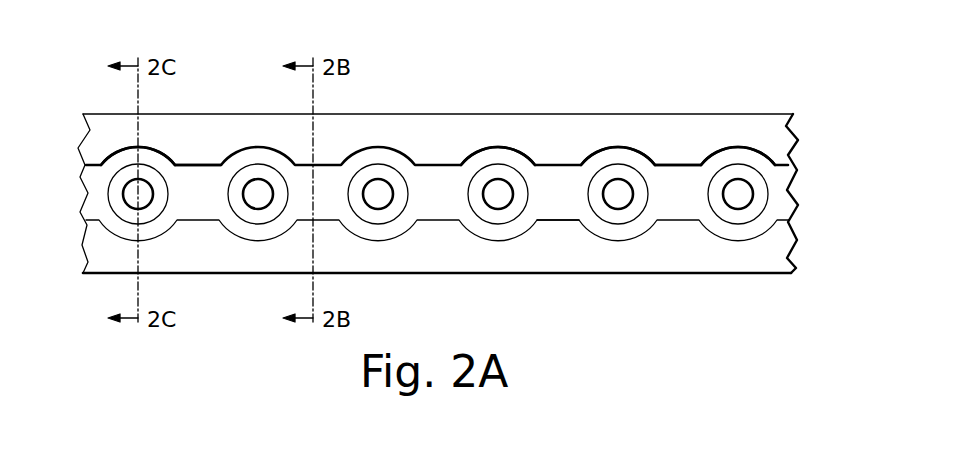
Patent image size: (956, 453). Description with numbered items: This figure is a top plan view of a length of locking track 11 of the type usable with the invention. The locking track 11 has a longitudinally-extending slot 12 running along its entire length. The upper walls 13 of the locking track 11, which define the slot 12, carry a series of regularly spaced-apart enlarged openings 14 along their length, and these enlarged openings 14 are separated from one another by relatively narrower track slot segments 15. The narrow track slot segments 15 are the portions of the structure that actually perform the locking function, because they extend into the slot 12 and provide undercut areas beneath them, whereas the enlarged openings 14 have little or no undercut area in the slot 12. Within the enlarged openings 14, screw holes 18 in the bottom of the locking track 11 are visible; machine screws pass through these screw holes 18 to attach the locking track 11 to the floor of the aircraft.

The locking track 11 is at (695, 124).
The longitudinally-extending slot 12 is at (431, 197).
The upper walls 13 is at (328, 126).
The enlarged openings 14 is at (149, 152).
The track slot segments 15 is at (192, 174).
The screw holes 18 is at (258, 185).